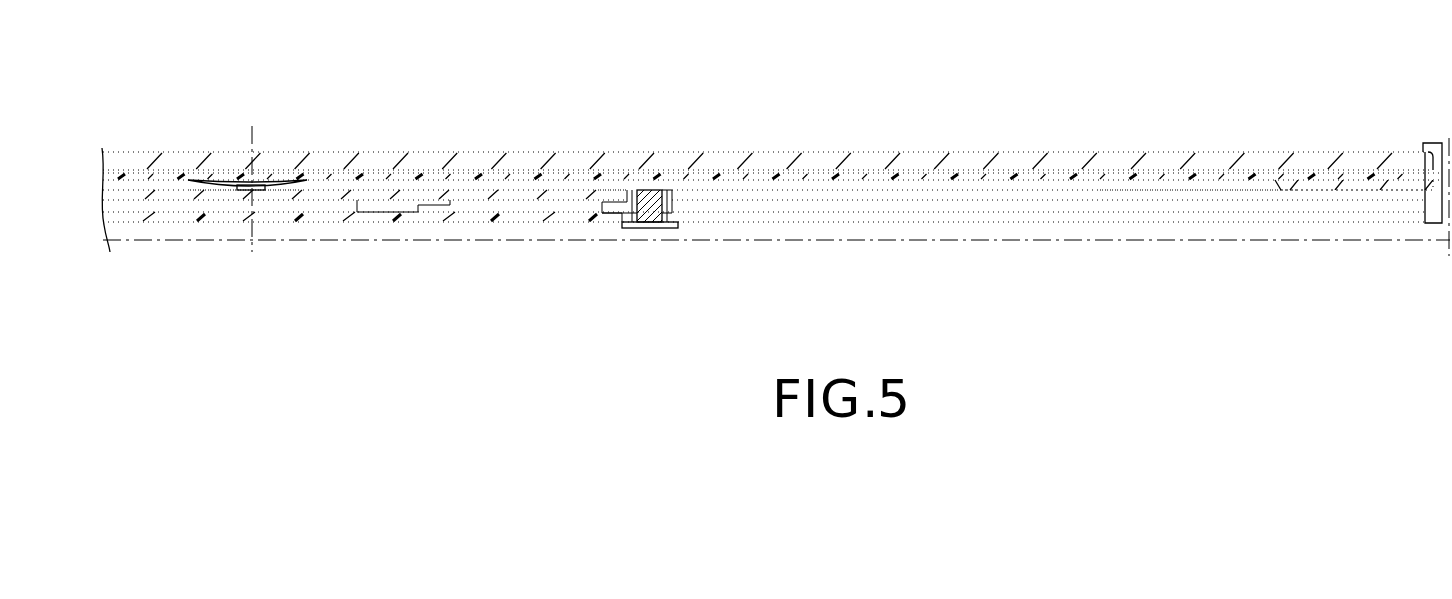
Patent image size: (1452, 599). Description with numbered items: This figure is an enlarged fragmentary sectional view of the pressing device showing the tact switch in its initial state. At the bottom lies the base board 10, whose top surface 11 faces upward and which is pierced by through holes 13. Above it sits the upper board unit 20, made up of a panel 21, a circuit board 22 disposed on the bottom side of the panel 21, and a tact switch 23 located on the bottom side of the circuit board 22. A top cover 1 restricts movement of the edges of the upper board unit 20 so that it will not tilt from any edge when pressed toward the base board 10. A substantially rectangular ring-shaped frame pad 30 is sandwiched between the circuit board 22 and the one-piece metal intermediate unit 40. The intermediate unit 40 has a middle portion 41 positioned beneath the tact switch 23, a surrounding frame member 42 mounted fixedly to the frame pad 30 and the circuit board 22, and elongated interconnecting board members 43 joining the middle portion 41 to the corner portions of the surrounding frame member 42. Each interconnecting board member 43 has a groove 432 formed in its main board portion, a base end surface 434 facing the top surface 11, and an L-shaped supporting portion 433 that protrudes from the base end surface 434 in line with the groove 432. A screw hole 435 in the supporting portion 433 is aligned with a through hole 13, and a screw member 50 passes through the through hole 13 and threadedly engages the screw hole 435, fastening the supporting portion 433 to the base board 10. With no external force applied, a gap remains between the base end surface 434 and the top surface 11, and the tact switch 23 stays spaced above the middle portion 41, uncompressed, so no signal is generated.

The top cover 1 is at (1434, 134).
The base board 10 is at (1352, 230).
The top surface 11 is at (906, 210).
The through holes 13 is at (620, 215).
The upper board unit 20 is at (918, 146).
The panel 21 is at (1077, 165).
The circuit board 22 is at (1212, 160).
The tact switch 23 is at (257, 188).
The frame pad 30 is at (1333, 176).
The intermediate unit 40 is at (1225, 207).
The middle portion 41 is at (223, 197).
The surrounding frame member 42 is at (1417, 202).
The interconnecting board members 43 is at (1153, 197).
The groove 432 is at (607, 190).
The supporting portion 433 is at (603, 213).
The base end surface 434 is at (1022, 202).
The screw hole 435 is at (675, 200).
The screw members 50 is at (666, 240).